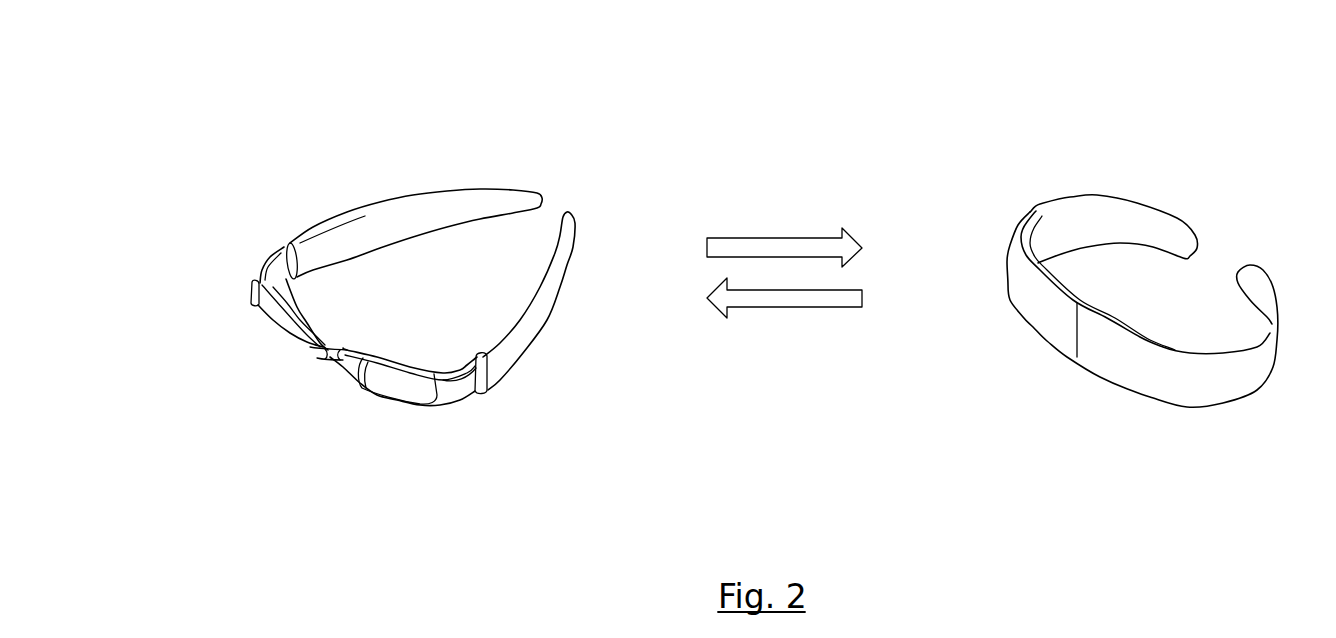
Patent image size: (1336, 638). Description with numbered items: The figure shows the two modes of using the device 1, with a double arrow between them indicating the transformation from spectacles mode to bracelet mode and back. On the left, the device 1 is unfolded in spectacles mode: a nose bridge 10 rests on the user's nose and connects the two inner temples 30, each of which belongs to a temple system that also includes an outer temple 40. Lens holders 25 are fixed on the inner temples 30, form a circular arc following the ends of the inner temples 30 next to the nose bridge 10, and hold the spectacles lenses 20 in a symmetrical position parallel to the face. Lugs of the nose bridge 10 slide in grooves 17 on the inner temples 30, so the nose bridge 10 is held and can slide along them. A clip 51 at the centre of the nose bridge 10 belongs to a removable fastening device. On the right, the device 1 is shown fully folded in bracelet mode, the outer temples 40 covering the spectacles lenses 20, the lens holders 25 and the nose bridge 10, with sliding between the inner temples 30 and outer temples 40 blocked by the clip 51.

The device 1 is at (200, 208).
The nose bridge 10 is at (334, 348).
The groove 17 is at (441, 370).
The spectacles lens 20 is at (407, 388).
The lens holder 25 is at (352, 380).
The inner temple 30 is at (455, 397).
The outer temple 40 is at (548, 344).
The clip 51 is at (324, 359).